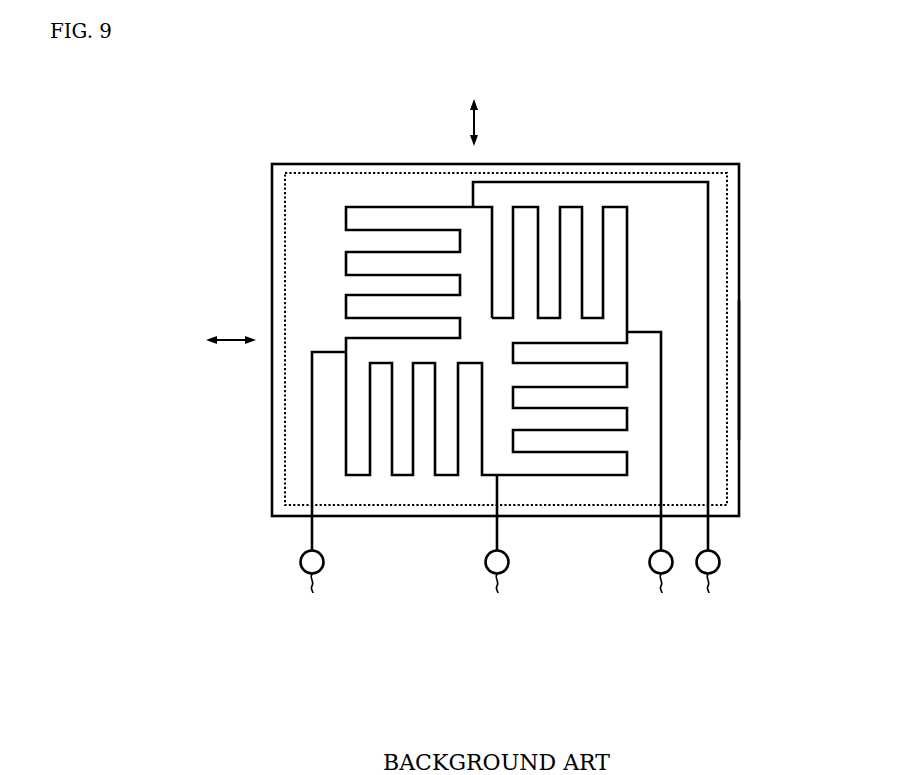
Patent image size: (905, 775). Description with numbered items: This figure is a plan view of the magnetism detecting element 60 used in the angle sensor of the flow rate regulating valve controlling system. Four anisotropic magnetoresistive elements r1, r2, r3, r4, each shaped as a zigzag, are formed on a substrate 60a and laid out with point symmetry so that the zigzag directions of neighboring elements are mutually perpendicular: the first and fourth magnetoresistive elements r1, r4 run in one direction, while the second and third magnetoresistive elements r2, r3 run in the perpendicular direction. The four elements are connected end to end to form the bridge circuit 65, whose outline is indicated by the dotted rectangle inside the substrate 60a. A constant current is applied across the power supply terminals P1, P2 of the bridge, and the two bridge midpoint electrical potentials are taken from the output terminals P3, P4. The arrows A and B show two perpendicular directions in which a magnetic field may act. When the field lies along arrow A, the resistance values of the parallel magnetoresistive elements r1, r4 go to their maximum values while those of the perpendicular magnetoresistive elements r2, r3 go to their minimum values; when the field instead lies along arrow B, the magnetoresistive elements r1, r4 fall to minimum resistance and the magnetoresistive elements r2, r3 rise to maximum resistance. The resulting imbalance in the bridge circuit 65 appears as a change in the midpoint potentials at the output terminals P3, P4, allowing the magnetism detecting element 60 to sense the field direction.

The magnetism detecting element 60 is at (763, 263).
The substrate 60a is at (740, 370).
The bridge circuit 65 is at (287, 234).
The magnetoresistive element r1 is at (403, 279).
The magnetoresistive element r2 is at (421, 428).
The magnetoresistive element r3 is at (574, 269).
The magnetoresistive element r4 is at (562, 418).
The power supply terminal P1 is at (603, 407).
The power supply terminal P2 is at (501, 552).
The output terminal P3 is at (316, 510).
The output terminal P4 is at (655, 501).
The arrow A is at (231, 328).
The arrow B is at (484, 122).